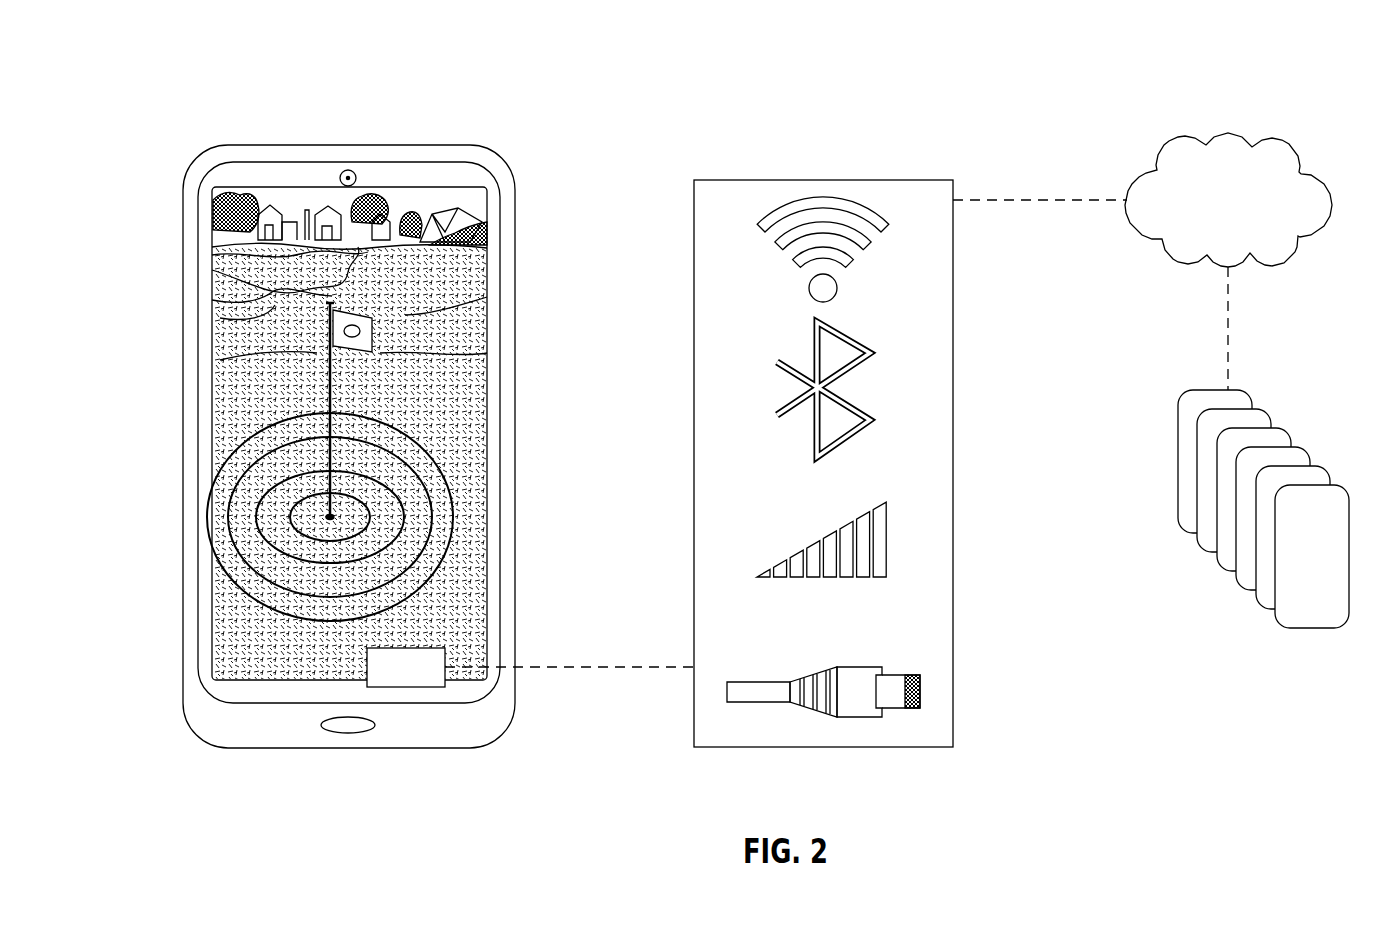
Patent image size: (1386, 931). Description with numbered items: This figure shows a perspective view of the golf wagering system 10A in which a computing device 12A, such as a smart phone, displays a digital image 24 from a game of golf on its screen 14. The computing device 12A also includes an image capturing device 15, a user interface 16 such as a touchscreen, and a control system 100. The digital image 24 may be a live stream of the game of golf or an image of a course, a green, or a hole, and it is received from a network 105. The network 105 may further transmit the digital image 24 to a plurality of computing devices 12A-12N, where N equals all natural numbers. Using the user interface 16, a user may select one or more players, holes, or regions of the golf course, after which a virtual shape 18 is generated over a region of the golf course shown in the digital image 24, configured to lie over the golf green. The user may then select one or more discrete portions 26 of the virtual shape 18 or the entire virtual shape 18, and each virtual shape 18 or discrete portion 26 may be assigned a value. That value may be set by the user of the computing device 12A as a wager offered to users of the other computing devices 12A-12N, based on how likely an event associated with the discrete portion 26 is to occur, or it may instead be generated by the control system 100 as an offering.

The computing device 12A is at (203, 150).
The image capturing device 15 is at (350, 170).
The digital image 24 is at (402, 268).
The user interface 16 is at (232, 406).
The screen 14 is at (217, 253).
The virtual shape 18 is at (215, 527).
The discrete portion 26 is at (395, 492).
The control system 100 is at (428, 682).
The golf wagering system 10A is at (853, 143).
The network 105 is at (1207, 214).
The plurality of computing devices 12A-12N is at (1292, 428).